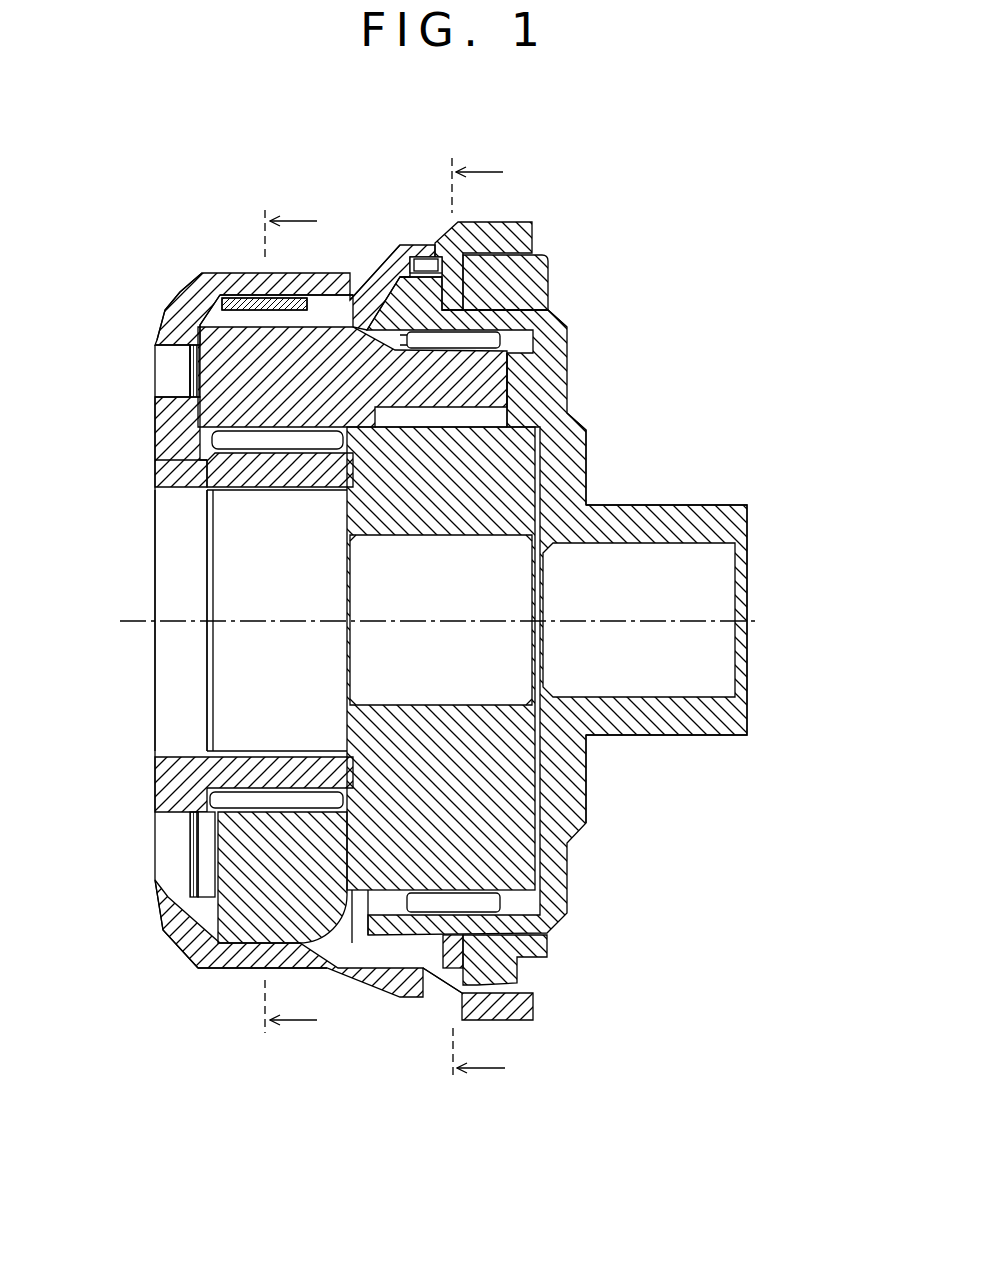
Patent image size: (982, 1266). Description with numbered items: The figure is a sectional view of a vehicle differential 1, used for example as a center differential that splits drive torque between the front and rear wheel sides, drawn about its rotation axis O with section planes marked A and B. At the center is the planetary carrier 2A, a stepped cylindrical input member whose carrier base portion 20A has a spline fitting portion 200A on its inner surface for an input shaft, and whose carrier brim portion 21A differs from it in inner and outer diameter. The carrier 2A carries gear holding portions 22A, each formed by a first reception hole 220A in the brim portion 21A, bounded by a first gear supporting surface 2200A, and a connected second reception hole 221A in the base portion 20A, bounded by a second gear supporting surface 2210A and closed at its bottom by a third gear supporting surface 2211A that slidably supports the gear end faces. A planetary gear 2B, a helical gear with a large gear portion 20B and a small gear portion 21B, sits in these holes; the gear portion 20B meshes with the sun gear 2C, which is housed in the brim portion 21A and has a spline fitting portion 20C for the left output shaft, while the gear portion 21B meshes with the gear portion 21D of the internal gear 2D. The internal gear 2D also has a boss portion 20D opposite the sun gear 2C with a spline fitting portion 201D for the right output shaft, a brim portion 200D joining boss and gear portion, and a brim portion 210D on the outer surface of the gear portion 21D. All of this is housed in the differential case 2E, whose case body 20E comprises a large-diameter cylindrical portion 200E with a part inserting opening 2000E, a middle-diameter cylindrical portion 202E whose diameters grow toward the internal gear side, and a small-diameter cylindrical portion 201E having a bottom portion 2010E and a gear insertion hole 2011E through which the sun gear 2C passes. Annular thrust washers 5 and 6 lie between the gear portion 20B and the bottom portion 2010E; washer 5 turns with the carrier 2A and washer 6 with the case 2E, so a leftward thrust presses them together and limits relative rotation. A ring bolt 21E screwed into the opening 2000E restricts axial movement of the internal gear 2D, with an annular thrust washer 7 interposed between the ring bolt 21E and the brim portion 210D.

The vehicle differential 1 is at (787, 252).
The planetary carrier 2A is at (547, 859).
The planetary gear 2B is at (245, 455).
The sun gear 2C is at (188, 684).
The internal gear 2D is at (606, 754).
The differential case 2E is at (437, 1088).
The thrust washer 5 is at (205, 830).
The thrust washer 6 is at (206, 862).
The thrust washer 7 is at (453, 272).
The carrier base portion 20A is at (497, 477).
The gear portion 20B is at (255, 442).
The spline fitting portion 20C is at (240, 548).
The boss portion 20D is at (687, 505).
The case body 20E is at (331, 979).
The carrier brim portion 21A is at (250, 273).
The gear portion 21B is at (398, 333).
The gear portion 21D is at (503, 322).
The ring bolt 21E is at (455, 994).
The gear holding portion 22A is at (250, 118).
The spline fitting portion 200A is at (378, 588).
The brim portion 200D is at (555, 434).
The large-diameter cylindrical portion 200E is at (520, 234).
The spline fitting portion 201D is at (717, 560).
The small-diameter cylindrical portion 201E is at (203, 290).
The middle-diameter cylindrical portion 202E is at (385, 268).
The brim portion 210D is at (425, 276).
The first reception hole 220A is at (313, 307).
The second reception hole 221A is at (366, 412).
The part inserting opening 2000E is at (508, 980).
The bottom portion 2010E is at (176, 877).
The gear insertion hole 2011E is at (195, 460).
The first gear supporting surface 2200A is at (205, 309).
The second gear supporting surface 2210A is at (477, 425).
The third gear supporting surface 2211A is at (495, 372).
The rotation axis O is at (758, 622).
The section line A is at (294, 622).
The section line B is at (481, 621).